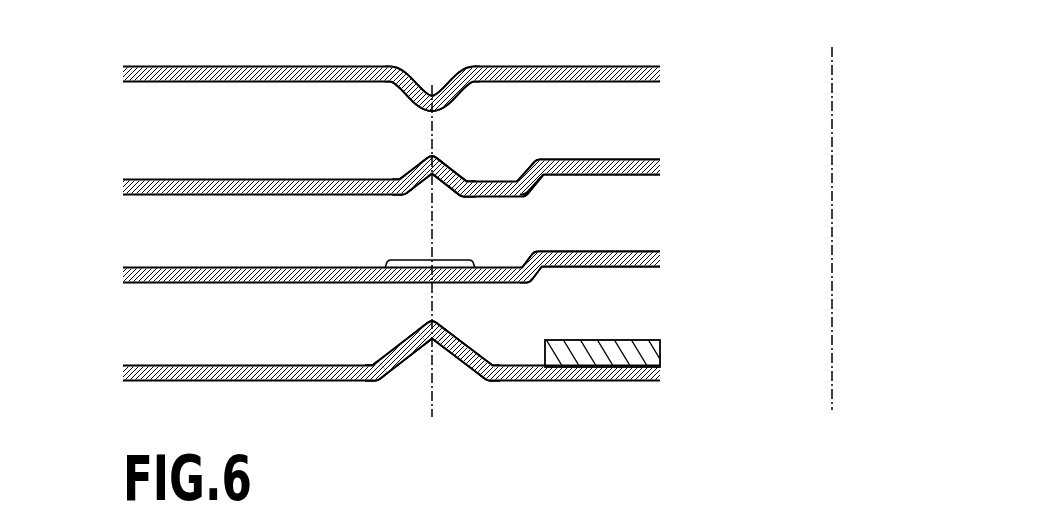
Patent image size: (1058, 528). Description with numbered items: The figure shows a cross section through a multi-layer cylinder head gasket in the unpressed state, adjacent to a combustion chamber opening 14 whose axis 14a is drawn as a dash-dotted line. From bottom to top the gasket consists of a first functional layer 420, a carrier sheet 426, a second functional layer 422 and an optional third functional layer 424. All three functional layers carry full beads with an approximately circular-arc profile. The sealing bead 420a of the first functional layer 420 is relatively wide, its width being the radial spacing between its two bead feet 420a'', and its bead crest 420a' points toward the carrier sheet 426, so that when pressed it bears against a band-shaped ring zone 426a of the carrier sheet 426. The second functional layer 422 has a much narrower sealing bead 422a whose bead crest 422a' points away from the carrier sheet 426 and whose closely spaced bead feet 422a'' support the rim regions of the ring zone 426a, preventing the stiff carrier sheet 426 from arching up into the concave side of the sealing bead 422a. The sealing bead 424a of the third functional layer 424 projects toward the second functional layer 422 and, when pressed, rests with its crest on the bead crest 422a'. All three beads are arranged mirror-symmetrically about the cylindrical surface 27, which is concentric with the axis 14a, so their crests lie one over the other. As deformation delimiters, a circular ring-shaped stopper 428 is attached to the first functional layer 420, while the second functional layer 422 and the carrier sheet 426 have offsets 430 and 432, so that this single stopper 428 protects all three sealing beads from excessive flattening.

The combustion chamber opening 14 is at (718, 104).
The axis of the combustion chamber opening 14a is at (832, 228).
The surface of a circular cylinder 27 is at (432, 417).
The first functional layer 420 is at (165, 380).
The sealing bead of the first functional layer 420a is at (371, 350).
The bead crest of the sealing bead 420a 420a' is at (515, 320).
The bead feet of the sealing bead 420a 420a'' is at (436, 402).
The second functional layer 422 is at (165, 194).
The sealing bead of the second functional layer 422a is at (497, 158).
The bead crest of the sealing bead 422a 422a' is at (517, 129).
The bead feet of the sealing bead 422a 422a'' is at (440, 206).
The third functional layer 424 is at (165, 81).
The sealing bead of the third functional layer 424a is at (392, 97).
The carrier sheet 426 is at (165, 282).
The ring zone of the carrier sheet 426a is at (433, 260).
The stopper 428 is at (660, 360).
The offset of the second functional layer 430 is at (533, 185).
The offset of the carrier sheet 432 is at (537, 266).